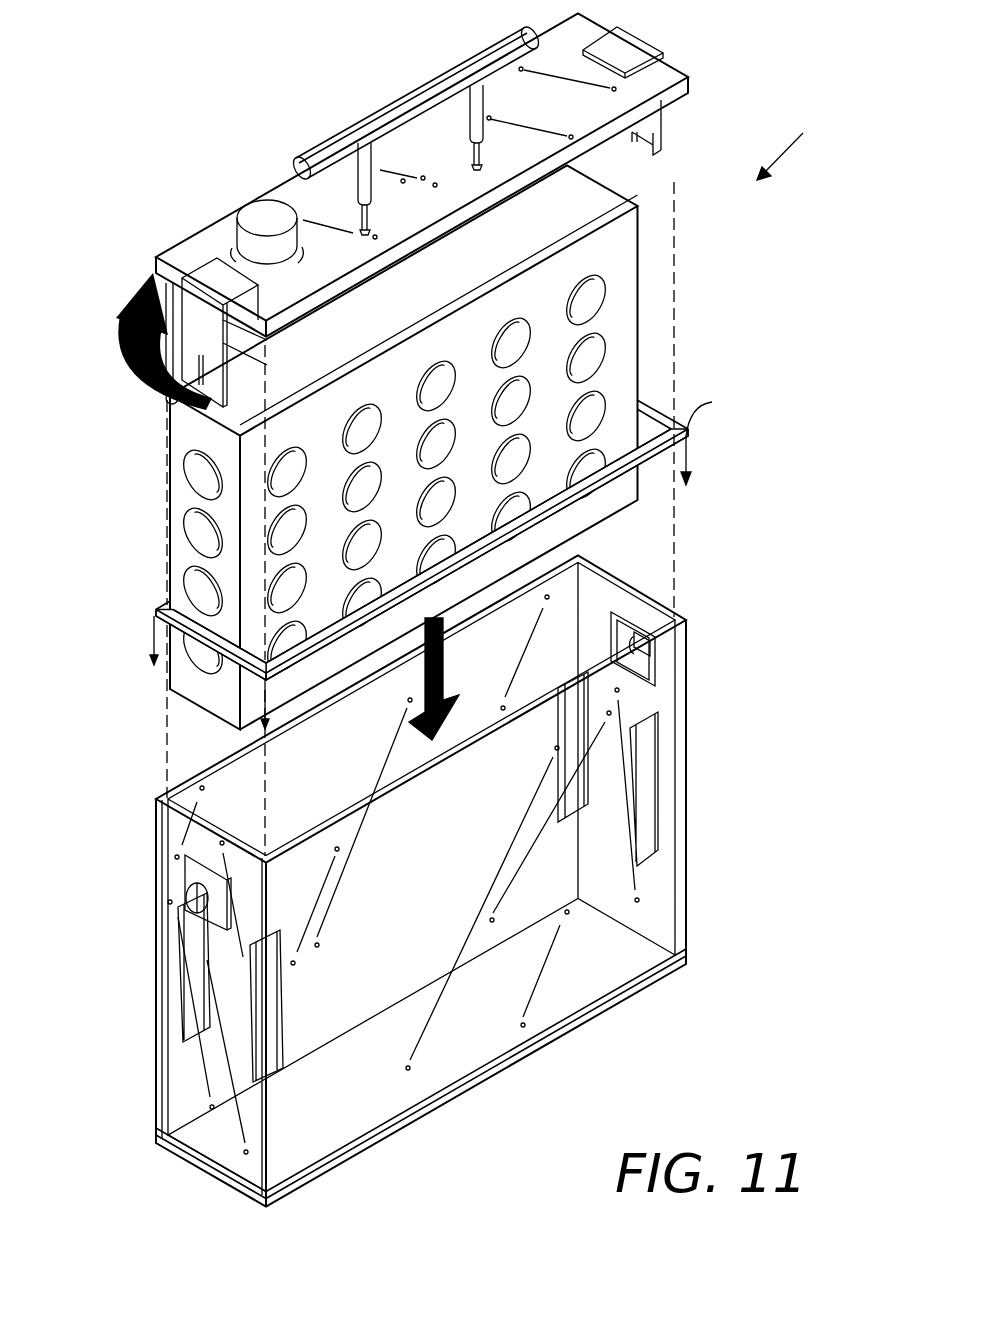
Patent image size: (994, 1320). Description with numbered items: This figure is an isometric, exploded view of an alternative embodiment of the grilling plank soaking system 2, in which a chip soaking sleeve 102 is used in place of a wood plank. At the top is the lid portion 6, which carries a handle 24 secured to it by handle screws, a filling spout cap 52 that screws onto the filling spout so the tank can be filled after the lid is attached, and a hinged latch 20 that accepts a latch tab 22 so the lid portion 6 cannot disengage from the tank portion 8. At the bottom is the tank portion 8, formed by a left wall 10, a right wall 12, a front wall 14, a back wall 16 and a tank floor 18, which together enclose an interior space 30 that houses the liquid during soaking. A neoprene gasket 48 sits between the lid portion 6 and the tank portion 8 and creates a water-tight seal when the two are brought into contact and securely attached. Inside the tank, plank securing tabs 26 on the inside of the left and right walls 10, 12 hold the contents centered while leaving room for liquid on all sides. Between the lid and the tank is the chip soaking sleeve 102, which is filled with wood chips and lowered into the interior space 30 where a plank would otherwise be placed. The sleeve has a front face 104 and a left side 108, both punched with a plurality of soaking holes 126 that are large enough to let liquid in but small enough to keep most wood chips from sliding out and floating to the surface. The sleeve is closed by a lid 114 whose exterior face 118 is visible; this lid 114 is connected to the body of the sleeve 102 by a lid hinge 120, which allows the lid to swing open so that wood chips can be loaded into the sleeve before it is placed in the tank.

The grilling plank soaking system 2 is at (785, 149).
The lid portion 6 is at (690, 80).
The tank portion 8 is at (684, 622).
The left wall 10 is at (178, 1097).
The right wall 12 is at (653, 597).
The front wall 14 is at (370, 810).
The back wall 16 is at (242, 755).
The tank floor 18 is at (440, 1107).
The hinged latch 20 is at (218, 278).
The latch tab 22 is at (188, 902).
The handle 24 is at (442, 82).
The plank securing tab 26 is at (281, 930).
The interior space 30 is at (454, 679).
The neoprene gasket 48 is at (446, 519).
The filling spout cap 52 is at (268, 215).
The chip soaking sleeve 102 is at (238, 437).
The front face 104 is at (560, 508).
The left side 108 is at (187, 557).
The lid 114 is at (612, 184).
The exterior face 118 is at (393, 334).
The lid hinge 120 is at (167, 402).
The soaking holes 126 is at (573, 352).